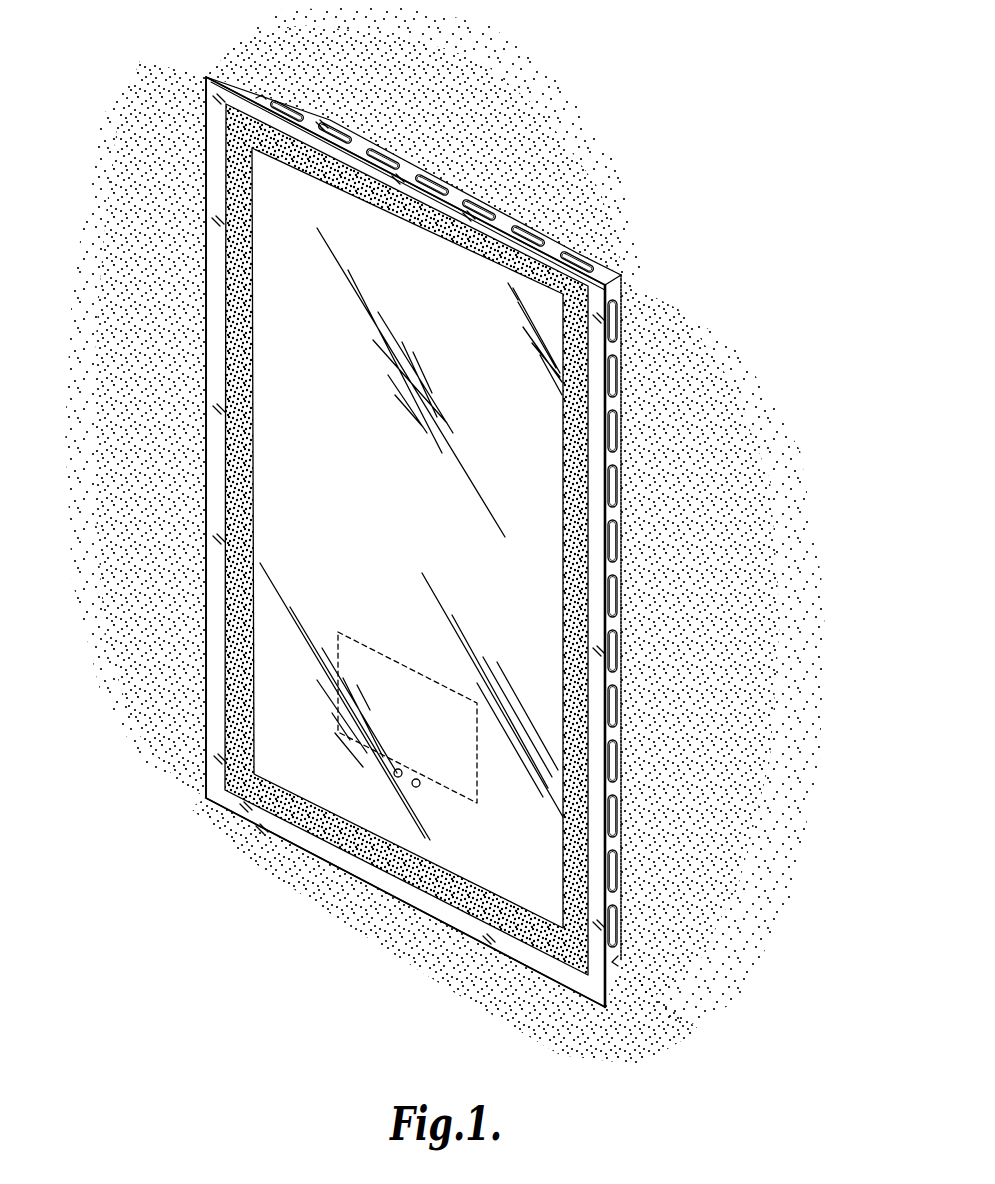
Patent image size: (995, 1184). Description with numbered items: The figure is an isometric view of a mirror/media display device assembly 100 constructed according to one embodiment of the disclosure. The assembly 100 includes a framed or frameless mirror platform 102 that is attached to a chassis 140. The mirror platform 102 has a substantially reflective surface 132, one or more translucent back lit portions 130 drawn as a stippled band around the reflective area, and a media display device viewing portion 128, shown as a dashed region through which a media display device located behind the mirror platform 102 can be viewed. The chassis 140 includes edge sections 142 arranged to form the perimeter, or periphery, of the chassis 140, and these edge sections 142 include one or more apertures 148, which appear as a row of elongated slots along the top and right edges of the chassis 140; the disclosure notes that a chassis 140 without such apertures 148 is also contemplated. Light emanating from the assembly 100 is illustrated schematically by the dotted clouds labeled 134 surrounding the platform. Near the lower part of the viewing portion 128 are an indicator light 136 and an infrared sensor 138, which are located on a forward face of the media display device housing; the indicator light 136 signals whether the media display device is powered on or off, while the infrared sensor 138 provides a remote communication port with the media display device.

The mirror/media display device assembly 100 is at (158, 828).
The mirror platform 102 is at (202, 122).
The media display device viewing portion 128 is at (338, 680).
The translucent back lit portion 130 is at (247, 187).
The substantially reflective surface 132 is at (267, 250).
The light emanating from the assembly 134 is at (486, 136).
The indicator light 136 is at (412, 784).
The infrared sensor 138 is at (394, 774).
The chassis 140 is at (609, 268).
The edge sections 142 is at (262, 95).
The apertures 148 is at (333, 137).